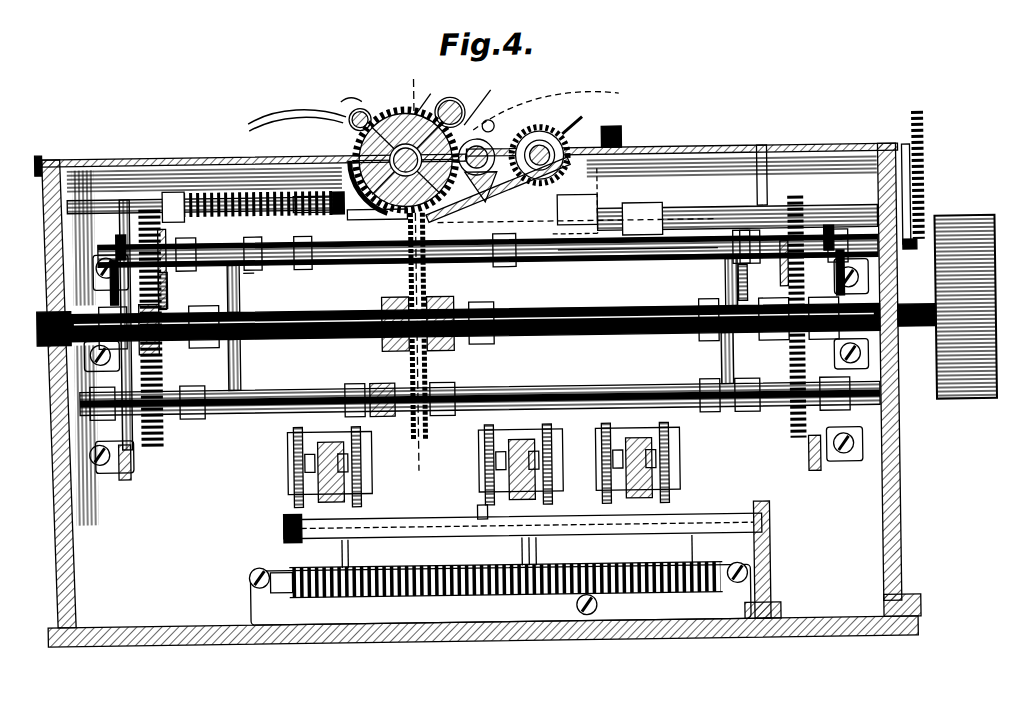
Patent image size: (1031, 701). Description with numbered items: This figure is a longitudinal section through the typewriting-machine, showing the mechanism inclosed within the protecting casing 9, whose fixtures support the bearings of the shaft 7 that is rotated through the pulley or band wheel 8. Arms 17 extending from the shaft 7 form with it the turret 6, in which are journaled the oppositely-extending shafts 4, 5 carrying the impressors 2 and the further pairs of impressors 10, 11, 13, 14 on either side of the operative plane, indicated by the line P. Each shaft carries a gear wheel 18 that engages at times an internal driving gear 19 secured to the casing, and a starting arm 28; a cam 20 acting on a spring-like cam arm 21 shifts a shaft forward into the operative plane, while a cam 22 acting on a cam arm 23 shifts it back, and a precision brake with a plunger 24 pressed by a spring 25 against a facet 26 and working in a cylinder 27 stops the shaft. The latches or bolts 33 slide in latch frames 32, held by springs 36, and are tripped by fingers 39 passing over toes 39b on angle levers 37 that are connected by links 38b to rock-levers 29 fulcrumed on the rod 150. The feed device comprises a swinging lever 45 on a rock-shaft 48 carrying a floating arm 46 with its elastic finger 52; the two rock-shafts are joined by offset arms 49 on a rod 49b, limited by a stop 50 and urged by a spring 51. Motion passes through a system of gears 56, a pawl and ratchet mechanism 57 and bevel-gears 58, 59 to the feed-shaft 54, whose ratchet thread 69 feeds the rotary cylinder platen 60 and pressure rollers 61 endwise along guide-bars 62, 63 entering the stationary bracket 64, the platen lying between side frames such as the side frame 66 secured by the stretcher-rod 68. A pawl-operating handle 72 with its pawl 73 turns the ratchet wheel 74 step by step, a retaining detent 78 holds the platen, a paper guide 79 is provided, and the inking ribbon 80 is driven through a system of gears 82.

The impressor 2 is at (458, 316).
The shaft 4 is at (489, 335).
The shaft 5 is at (590, 256).
The turret 6 is at (230, 410).
The shaft 7 is at (650, 262).
The pulley or band wheel 8 is at (946, 307).
The protecting casing 9 is at (890, 440).
The impressor 10 is at (377, 219).
The impressor 11 is at (577, 214).
The impressor 13 is at (398, 327).
The impressor 14 is at (439, 326).
The arms 17 is at (466, 341).
The gear wheel 18 is at (846, 236).
The internal driving gear 19 is at (160, 432).
The cam 20 is at (124, 470).
The cam arm 21 is at (112, 268).
The cam 22 is at (483, 279).
The cam arm 23 is at (118, 232).
The plunger 24 is at (242, 272).
The spring 25 is at (260, 283).
The facet 26 is at (252, 238).
The cylinder 27 is at (722, 285).
The starting arm 28 is at (676, 219).
The rock-lever 29 is at (292, 566).
The latch frame 32 is at (345, 489).
The latch or bolt 33 is at (350, 430).
The spring 36 is at (293, 460).
The angle lever 37 is at (532, 560).
The link 38b is at (342, 560).
The finger 39 is at (281, 523).
The toe 39b is at (467, 511).
The swinging lever 45 is at (520, 211).
The floating arm 46 is at (449, 285).
The rock-shaft 48 is at (130, 175).
The offset arms 49 is at (625, 216).
The rod 49b is at (588, 200).
The stop 50 is at (312, 212).
The spring 51 is at (250, 190).
The elastic finger 52 is at (295, 481).
The feed-shaft 54 is at (768, 152).
The system of gears 56 is at (930, 180).
The pawl and ratchet mechanism 57 is at (912, 204).
The bevel-gear 58 is at (574, 118).
The bevel-gear 59 is at (546, 128).
The rotary cylinder platen 60 is at (431, 94).
The pressure rollers 61 is at (486, 187).
The guide-bar 62 is at (403, 152).
The guide-bar 63 is at (482, 151).
The stationary bracket 64 is at (498, 189).
The side frame 66 is at (484, 100).
The stretcher-rod 68 is at (453, 106).
The ratchet thread 69 is at (575, 212).
The pawl-operating handle 72 is at (300, 110).
The pawl 73 is at (369, 107).
The ratchet wheel 74 is at (323, 148).
The retaining detent 78 is at (546, 110).
The paper guide 79 is at (498, 125).
The inking ribbon 80 is at (344, 203).
The system of gears 82 is at (619, 133).
The rod 150 is at (250, 582).
The operative plane line P is at (418, 272).